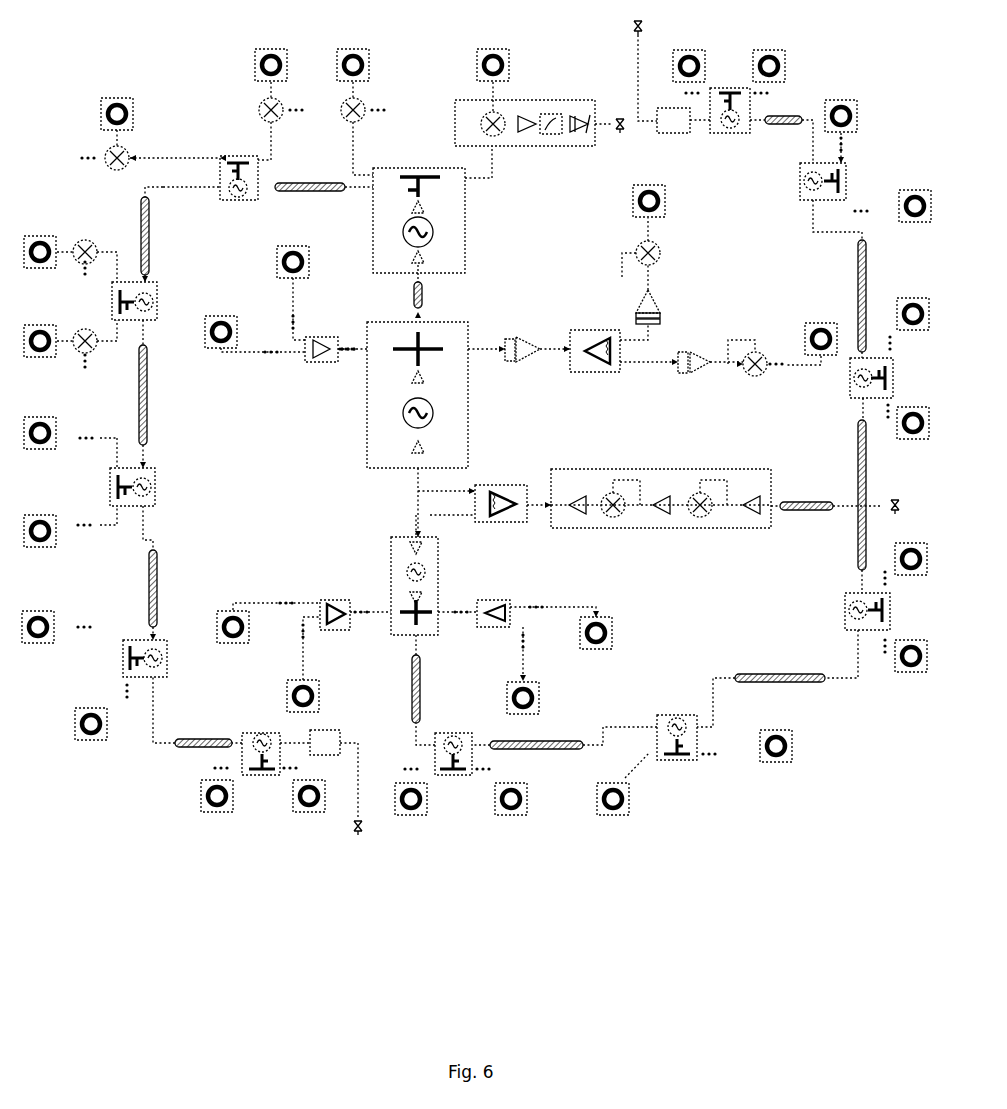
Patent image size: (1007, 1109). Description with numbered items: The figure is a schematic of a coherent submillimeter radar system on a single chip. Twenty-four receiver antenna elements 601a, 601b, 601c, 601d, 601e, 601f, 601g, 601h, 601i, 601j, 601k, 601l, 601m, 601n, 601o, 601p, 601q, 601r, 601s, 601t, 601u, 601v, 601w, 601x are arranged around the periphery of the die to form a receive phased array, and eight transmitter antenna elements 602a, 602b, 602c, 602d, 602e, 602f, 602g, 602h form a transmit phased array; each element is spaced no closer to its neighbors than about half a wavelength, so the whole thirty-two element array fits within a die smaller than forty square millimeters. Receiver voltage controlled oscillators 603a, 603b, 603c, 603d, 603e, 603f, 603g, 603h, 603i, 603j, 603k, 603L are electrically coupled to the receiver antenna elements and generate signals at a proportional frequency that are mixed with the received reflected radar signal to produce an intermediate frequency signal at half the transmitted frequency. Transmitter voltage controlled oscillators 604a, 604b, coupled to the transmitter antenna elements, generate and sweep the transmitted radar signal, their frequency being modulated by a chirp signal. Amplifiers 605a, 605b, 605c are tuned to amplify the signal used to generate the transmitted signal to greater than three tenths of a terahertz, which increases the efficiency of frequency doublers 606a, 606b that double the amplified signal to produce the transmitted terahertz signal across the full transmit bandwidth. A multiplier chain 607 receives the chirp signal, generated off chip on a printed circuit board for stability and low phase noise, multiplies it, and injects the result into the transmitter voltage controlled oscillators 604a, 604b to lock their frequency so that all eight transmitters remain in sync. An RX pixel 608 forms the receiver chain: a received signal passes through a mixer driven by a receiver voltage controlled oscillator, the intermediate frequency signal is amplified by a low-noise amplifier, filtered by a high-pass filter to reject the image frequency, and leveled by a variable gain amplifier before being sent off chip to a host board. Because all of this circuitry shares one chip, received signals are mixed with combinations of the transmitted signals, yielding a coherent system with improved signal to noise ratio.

The receiver antenna element 601a is at (121, 122).
The receiver antenna element 601b is at (276, 68).
The receiver antenna element 601c is at (358, 68).
The receiver antenna element 601d is at (496, 48).
The receiver antenna element 601e is at (694, 51).
The receiver antenna element 601f is at (772, 48).
The receiver antenna element 601g is at (846, 100).
The receiver antenna element 601h is at (919, 193).
The receiver antenna element 601i is at (917, 302).
The receiver antenna element 601j is at (918, 411).
The receiver antenna element 601k is at (917, 549).
The receiver antenna element 601l is at (915, 645).
The receiver antenna element 601m is at (782, 759).
The receiver antenna element 601n is at (616, 812).
The receiver antenna element 601o is at (516, 812).
The receiver antenna element 601p is at (416, 812).
The receiver antenna element 601q is at (316, 811).
The receiver antenna element 601r is at (213, 811).
The receiver antenna element 601s is at (90, 736).
The receiver antenna element 601t is at (39, 638).
The receiver antenna element 601u is at (39, 539).
The receiver antenna element 601v is at (43, 445).
The receiver antenna element 601w is at (59, 352).
The receiver antenna element 601x is at (59, 265).
The transmitter antenna element 602a is at (221, 321).
The transmitter antenna element 602b is at (296, 251).
The transmitter antenna element 602c is at (653, 190).
The transmitter antenna element 602d is at (828, 331).
The transmitter antenna element 602e is at (598, 645).
The transmitter antenna element 602f is at (526, 709).
The transmitter antenna element 602g is at (326, 696).
The transmitter antenna element 602h is at (229, 638).
The receiver voltage controlled oscillator 603a is at (443, 225).
The receiver voltage controlled oscillator 603b is at (241, 187).
The receiver voltage controlled oscillator 603c is at (158, 299).
The receiver voltage controlled oscillator 603d is at (157, 485).
The receiver voltage controlled oscillator 603e is at (168, 667).
The receiver voltage controlled oscillator 603f is at (259, 745).
The receiver voltage controlled oscillator 603g is at (453, 746).
The receiver voltage controlled oscillator 603h is at (676, 728).
The receiver voltage controlled oscillator 603i is at (846, 611).
The receiver voltage controlled oscillator 603j is at (855, 388).
The receiver voltage controlled oscillator 603k is at (804, 181).
The receiver voltage controlled oscillator 603L is at (704, 121).
The transmitter voltage controlled oscillator 604a is at (441, 395).
The transmitter voltage controlled oscillator 604b is at (439, 586).
The amplifier 605a is at (521, 342).
The amplifier 605b is at (669, 305).
The amplifier 605c is at (691, 377).
The frequency doubler 606a is at (671, 253).
The frequency doubler 606b is at (745, 349).
The multiplier chain 607 is at (661, 490).
The RX pixel 608 is at (525, 137).